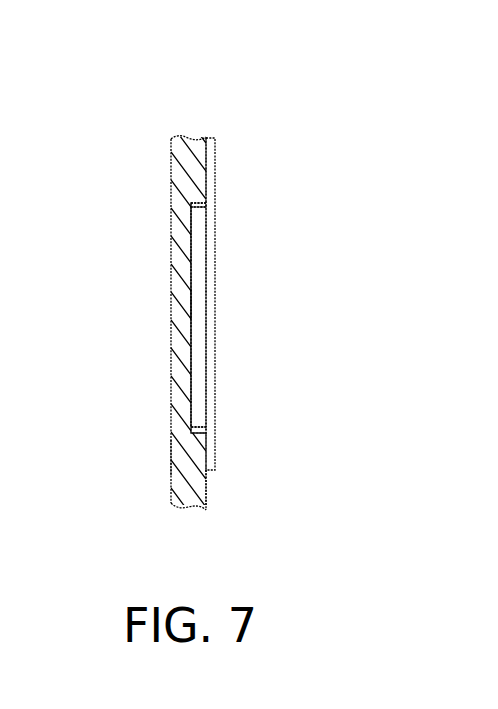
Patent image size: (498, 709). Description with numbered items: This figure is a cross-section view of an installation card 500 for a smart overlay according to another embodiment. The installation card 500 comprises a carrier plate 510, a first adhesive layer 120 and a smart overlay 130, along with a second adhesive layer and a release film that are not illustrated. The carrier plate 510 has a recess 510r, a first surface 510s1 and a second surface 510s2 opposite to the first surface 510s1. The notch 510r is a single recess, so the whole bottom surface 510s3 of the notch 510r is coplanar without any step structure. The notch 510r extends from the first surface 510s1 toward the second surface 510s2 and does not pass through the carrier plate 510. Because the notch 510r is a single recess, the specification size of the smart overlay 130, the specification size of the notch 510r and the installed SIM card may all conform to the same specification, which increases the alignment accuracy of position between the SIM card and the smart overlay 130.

The installation card 500 is at (173, 104).
The carrier plate 510 is at (192, 140).
The recess 510r is at (200, 204).
The first surface 510s1 is at (208, 488).
The second surface 510s2 is at (171, 457).
The bottom surface 510s3 is at (192, 305).
The first adhesive layer 120 is at (210, 162).
The smart overlay 130 is at (198, 361).